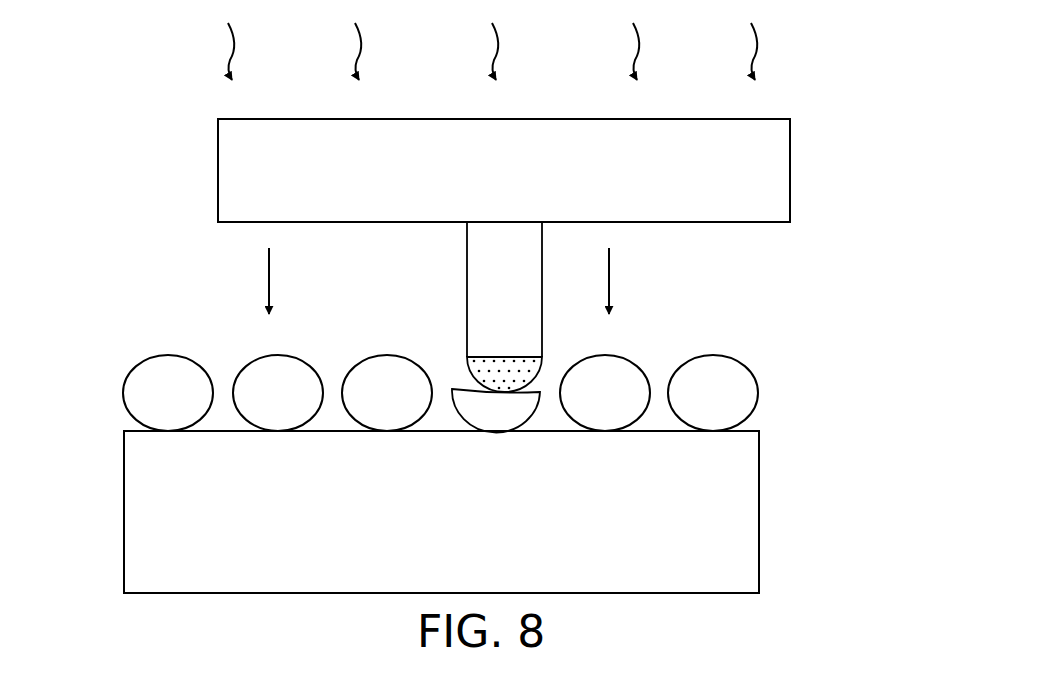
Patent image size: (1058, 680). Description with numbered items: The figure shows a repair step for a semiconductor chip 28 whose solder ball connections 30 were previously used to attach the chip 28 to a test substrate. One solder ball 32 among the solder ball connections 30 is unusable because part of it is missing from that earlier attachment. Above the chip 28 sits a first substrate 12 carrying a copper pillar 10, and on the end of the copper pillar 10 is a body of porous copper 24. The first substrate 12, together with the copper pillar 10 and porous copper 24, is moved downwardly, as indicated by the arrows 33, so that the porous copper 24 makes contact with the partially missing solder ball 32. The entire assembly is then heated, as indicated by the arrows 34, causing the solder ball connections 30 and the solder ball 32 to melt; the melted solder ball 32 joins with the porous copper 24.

The arrows 34 is at (760, 43).
The first substrate 12 is at (230, 152).
The copper pillar 10 is at (490, 275).
The porous copper 24 is at (470, 373).
The arrows 33 is at (612, 291).
The solder ball connections 30 is at (100, 354).
The solder ball 32 is at (485, 425).
The chip 28 is at (142, 531).